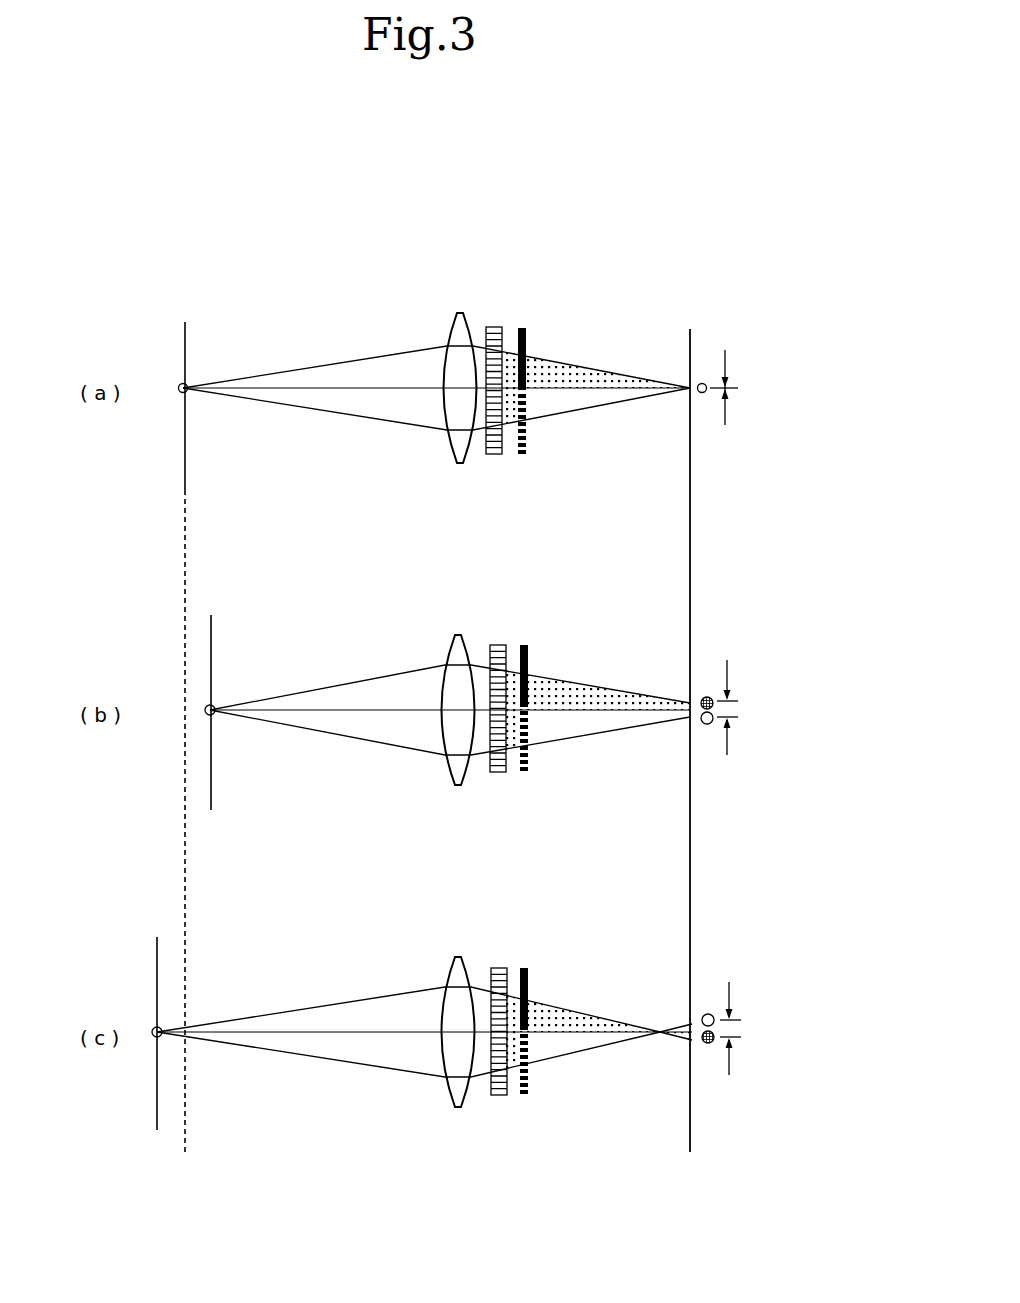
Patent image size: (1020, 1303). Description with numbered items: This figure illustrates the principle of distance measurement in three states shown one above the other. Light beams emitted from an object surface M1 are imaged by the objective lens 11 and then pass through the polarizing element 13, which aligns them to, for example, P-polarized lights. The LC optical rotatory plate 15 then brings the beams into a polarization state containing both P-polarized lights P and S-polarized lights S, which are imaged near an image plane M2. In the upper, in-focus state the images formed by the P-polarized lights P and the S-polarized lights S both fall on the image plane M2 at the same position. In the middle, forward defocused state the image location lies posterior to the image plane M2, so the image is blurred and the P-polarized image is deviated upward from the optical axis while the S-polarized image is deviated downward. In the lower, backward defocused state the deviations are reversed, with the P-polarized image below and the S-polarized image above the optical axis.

The objective lens 11 is at (457, 326).
The polarizing element 13 is at (490, 326).
The LC optical rotatory plate 15 is at (521, 328).
The object surface M1 is at (185, 345).
The image plane M2 is at (690, 341).
The P-polarized lights P is at (589, 366).
The S-polarized lights S is at (573, 405).